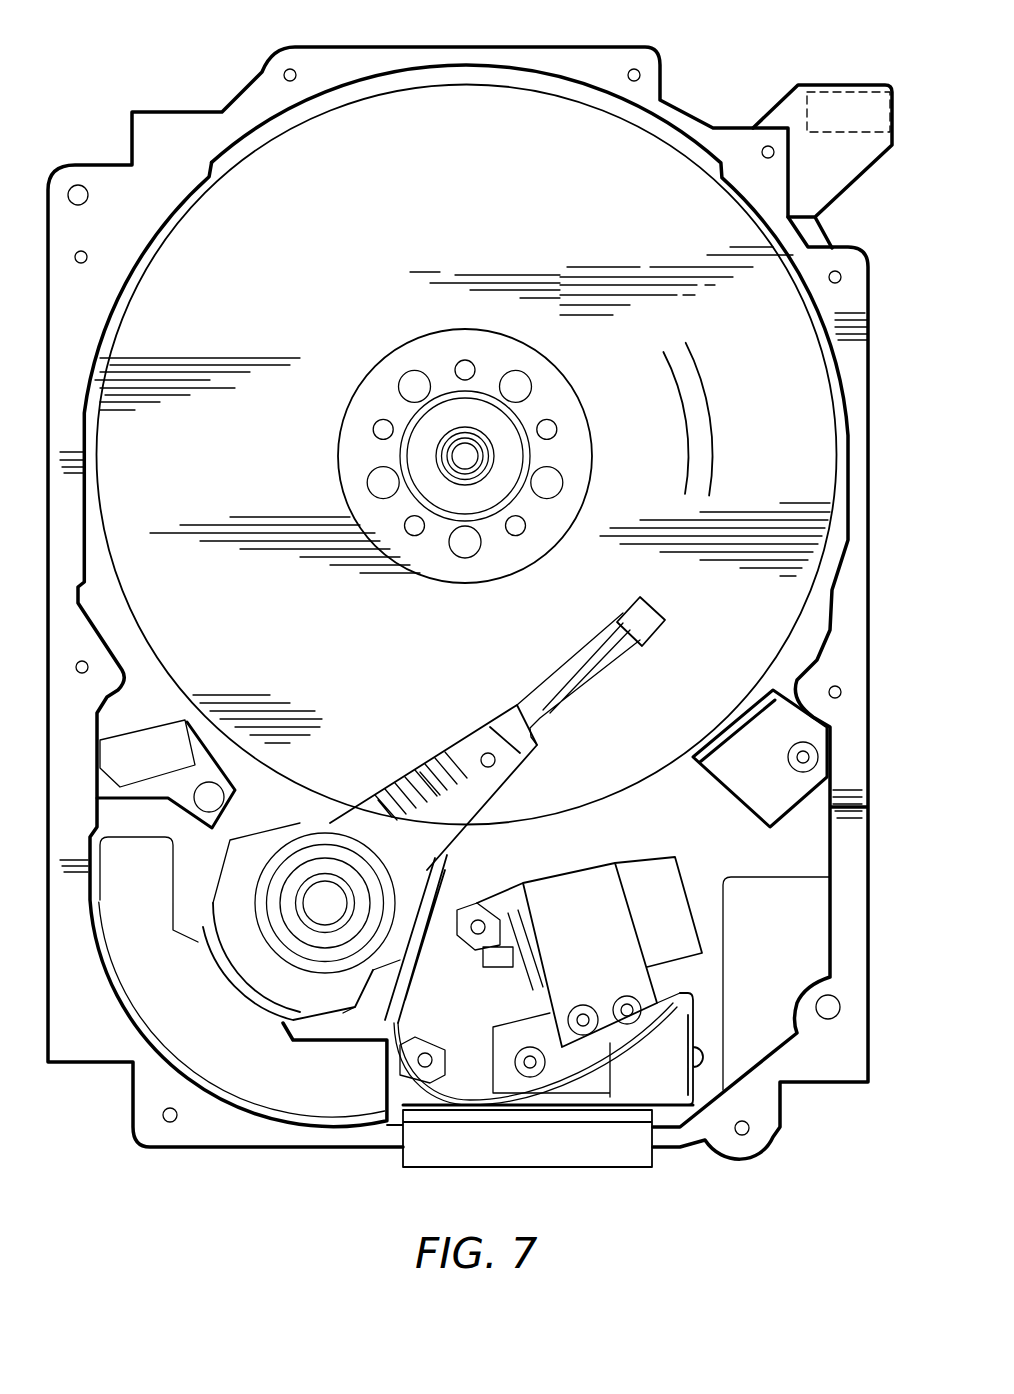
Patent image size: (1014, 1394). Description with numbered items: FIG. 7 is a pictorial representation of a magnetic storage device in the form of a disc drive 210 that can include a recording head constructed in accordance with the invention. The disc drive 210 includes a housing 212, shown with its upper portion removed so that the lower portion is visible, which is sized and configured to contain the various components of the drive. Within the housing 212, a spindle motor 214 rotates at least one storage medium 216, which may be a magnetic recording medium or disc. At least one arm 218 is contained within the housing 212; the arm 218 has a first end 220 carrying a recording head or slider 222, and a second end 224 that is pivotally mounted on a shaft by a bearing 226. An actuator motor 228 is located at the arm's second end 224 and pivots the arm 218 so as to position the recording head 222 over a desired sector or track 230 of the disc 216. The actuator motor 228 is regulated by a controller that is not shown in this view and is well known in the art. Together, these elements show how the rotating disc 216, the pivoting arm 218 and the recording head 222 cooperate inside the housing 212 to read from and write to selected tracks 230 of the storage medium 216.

The disc drive 210 is at (108, 97).
The housing 212 is at (612, 62).
The spindle motor 214 is at (458, 460).
The storage medium 216 is at (378, 234).
The arm 218 is at (450, 777).
The first end 220 is at (580, 650).
The recording head 222 is at (640, 620).
The second end 224 is at (353, 837).
The bearing 226 is at (313, 890).
The actuator motor 228 is at (215, 1034).
The track 230 is at (698, 430).